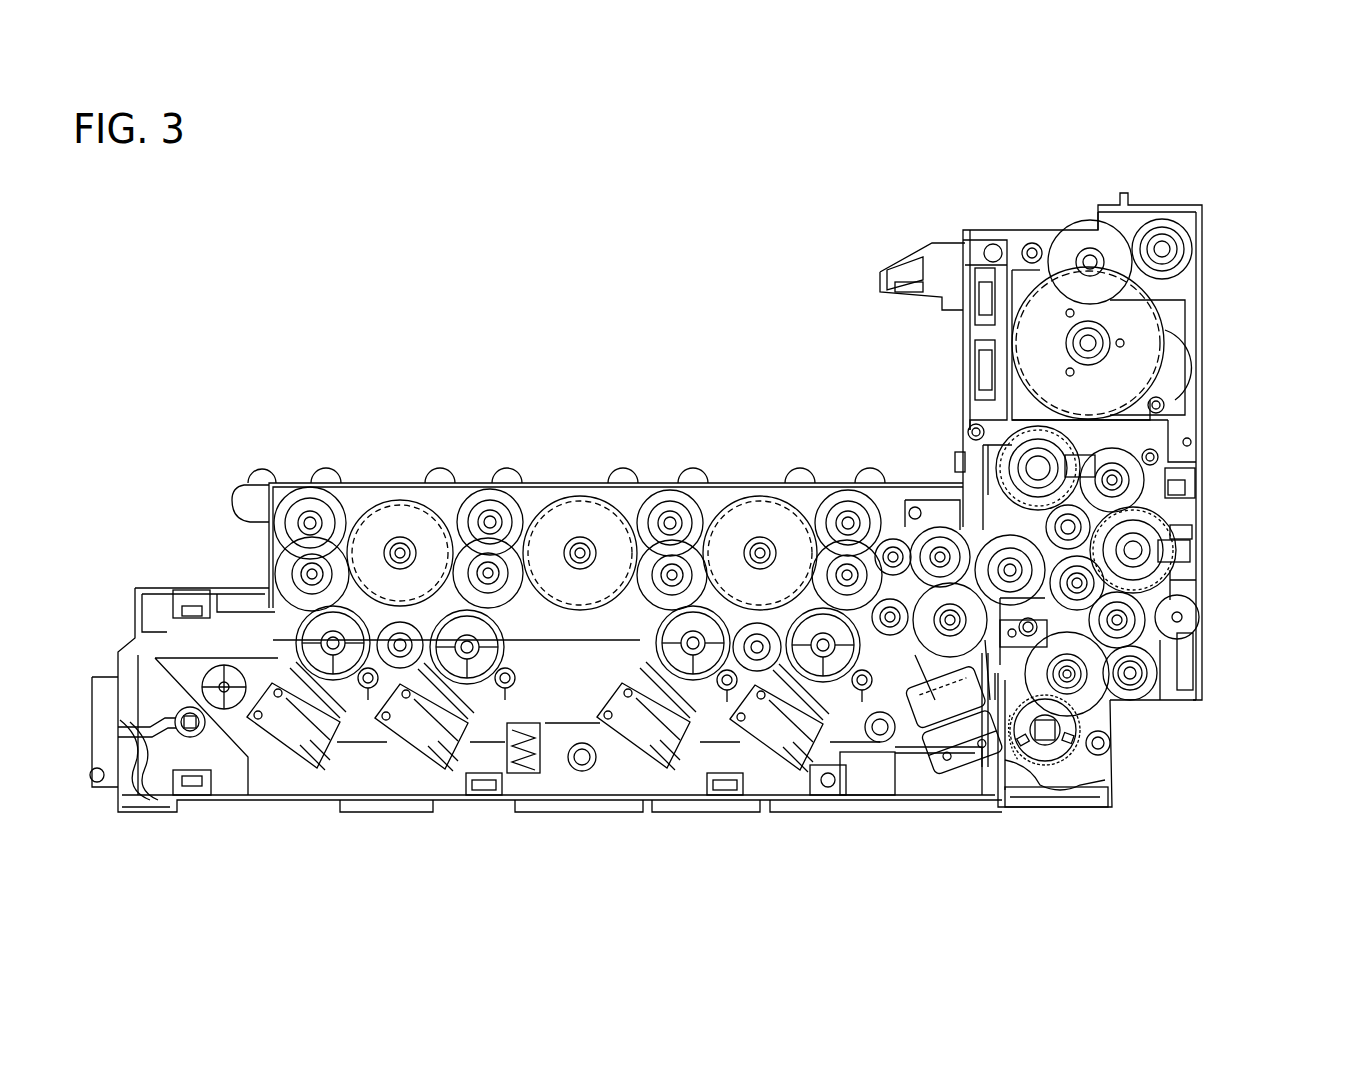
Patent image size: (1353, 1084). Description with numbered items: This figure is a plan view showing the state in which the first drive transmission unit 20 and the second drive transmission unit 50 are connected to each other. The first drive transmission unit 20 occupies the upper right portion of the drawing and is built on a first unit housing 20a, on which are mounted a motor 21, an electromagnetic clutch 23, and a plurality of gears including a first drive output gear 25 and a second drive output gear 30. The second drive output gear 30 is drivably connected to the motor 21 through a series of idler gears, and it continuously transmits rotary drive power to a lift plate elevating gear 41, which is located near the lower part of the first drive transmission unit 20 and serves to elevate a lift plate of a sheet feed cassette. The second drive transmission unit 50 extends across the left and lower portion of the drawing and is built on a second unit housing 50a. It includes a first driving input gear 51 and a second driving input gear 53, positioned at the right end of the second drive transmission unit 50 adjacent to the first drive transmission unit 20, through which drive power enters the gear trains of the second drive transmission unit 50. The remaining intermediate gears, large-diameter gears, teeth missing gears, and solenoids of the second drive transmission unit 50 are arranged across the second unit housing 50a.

The first drive transmission unit 20 is at (1219, 382).
The first unit housing 20a is at (1185, 597).
The motor 21 is at (1062, 298).
The electromagnetic clutch 23 is at (1150, 534).
The first drive output gear 25 is at (990, 533).
The second drive output gear 30 is at (1125, 758).
The lift plate elevating gear 41 is at (1040, 753).
The second drive transmission unit 50 is at (377, 423).
The second unit housing 50a is at (627, 783).
The first driving input gear 51 is at (930, 527).
The second driving input gear 53 is at (942, 640).